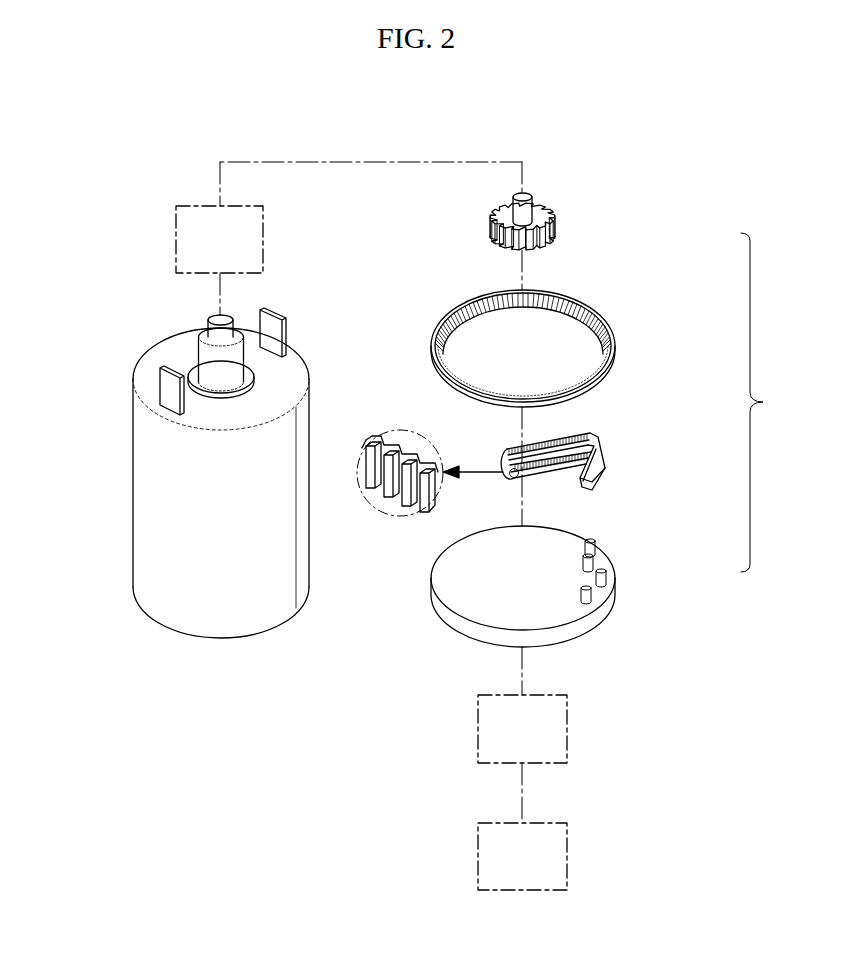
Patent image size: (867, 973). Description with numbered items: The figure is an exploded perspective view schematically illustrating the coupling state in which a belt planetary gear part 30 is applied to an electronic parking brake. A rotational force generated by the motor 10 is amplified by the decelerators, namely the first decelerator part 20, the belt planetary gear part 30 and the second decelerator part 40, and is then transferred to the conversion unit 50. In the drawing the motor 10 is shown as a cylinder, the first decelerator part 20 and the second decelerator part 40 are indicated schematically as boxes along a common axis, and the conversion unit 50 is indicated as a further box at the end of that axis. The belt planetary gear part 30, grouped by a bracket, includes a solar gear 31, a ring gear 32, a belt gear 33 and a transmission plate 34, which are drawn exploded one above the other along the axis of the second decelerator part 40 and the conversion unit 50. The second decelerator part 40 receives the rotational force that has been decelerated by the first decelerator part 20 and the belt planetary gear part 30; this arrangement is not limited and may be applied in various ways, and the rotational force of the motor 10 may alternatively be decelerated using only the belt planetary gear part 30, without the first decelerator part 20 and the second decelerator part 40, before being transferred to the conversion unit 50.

The motor 10 is at (148, 522).
The first decelerator part 20 is at (176, 240).
The belt planetary gear part 30 is at (576, 420).
The solar gear 31 is at (555, 232).
The ring gear 32 is at (615, 340).
The belt gear 33 is at (605, 463).
The transmission plate 34 is at (636, 576).
The second decelerator part 40 is at (567, 728).
The conversion unit 50 is at (567, 857).